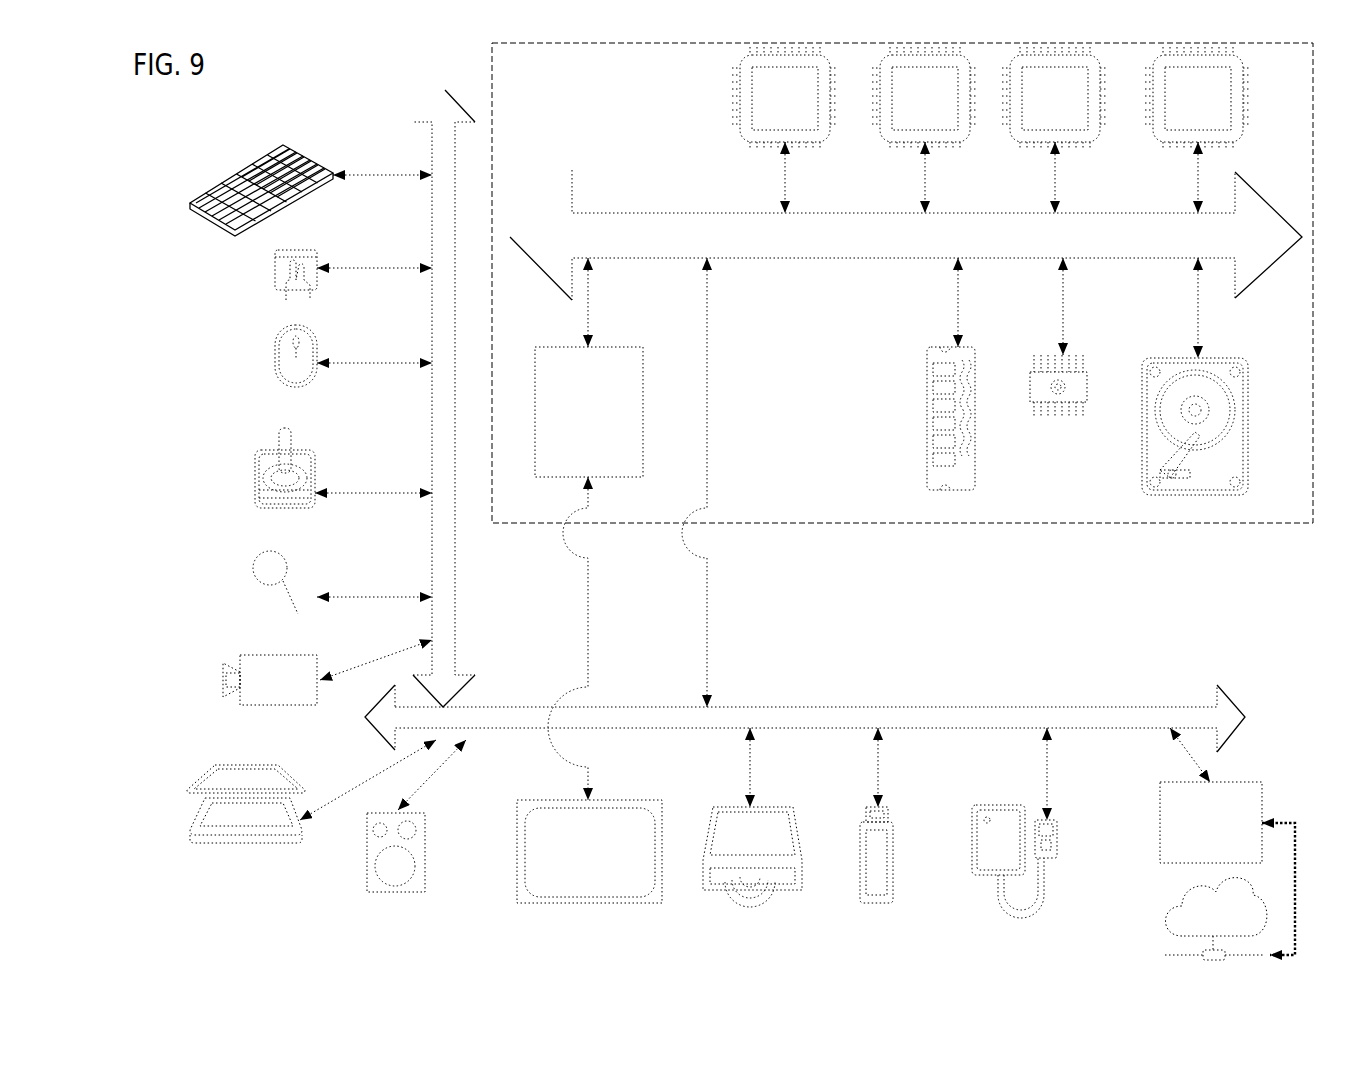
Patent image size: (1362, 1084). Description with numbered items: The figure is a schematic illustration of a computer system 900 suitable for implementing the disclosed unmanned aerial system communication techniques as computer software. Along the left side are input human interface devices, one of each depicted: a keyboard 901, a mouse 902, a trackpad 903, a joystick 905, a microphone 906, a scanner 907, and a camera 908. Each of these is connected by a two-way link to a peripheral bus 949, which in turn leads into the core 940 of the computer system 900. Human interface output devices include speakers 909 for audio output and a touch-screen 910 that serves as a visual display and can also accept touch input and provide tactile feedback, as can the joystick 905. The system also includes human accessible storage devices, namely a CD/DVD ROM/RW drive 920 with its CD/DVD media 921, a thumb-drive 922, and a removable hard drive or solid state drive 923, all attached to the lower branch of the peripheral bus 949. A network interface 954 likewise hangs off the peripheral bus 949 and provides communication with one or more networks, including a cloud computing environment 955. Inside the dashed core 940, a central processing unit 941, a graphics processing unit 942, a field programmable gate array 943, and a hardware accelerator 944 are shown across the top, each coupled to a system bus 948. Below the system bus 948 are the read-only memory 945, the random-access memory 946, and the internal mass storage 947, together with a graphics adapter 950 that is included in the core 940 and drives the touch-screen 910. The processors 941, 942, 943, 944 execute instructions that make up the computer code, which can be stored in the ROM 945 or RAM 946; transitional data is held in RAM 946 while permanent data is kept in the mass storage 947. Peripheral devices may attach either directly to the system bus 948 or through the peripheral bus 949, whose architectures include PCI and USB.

The computer system 900 is at (244, 92).
The keyboard 901 is at (188, 207).
The mouse 902 is at (268, 357).
The trackpad 903 is at (268, 278).
The joystick 905 is at (255, 490).
The microphone 906 is at (253, 570).
The scanner 907 is at (188, 826).
The camera 908 is at (226, 683).
The speakers 909 is at (396, 892).
The touch-screen 910 is at (590, 905).
The CD/DVD ROM/RW 920 is at (770, 844).
The CD/DVD media 921 is at (738, 897).
The thumb-drive 922 is at (875, 905).
The removable hard drive or solid state drive 923 is at (975, 878).
The core 940 is at (893, 523).
The central processing unit 941 is at (785, 130).
The graphics processing unit 942 is at (925, 130).
The field programmable gate array 943 is at (1055, 130).
The hardware accelerator 944 is at (1198, 130).
The read-only memory 945 is at (1050, 418).
The random-access memory 946 is at (912, 424).
The mass storage 947 is at (1155, 358).
The system bus 948 is at (906, 235).
The peripheral bus 949 is at (413, 122).
The graphics adapter 950 is at (589, 529).
The network interface 954 is at (1227, 841).
The cloud computing environment 955 is at (1167, 923).